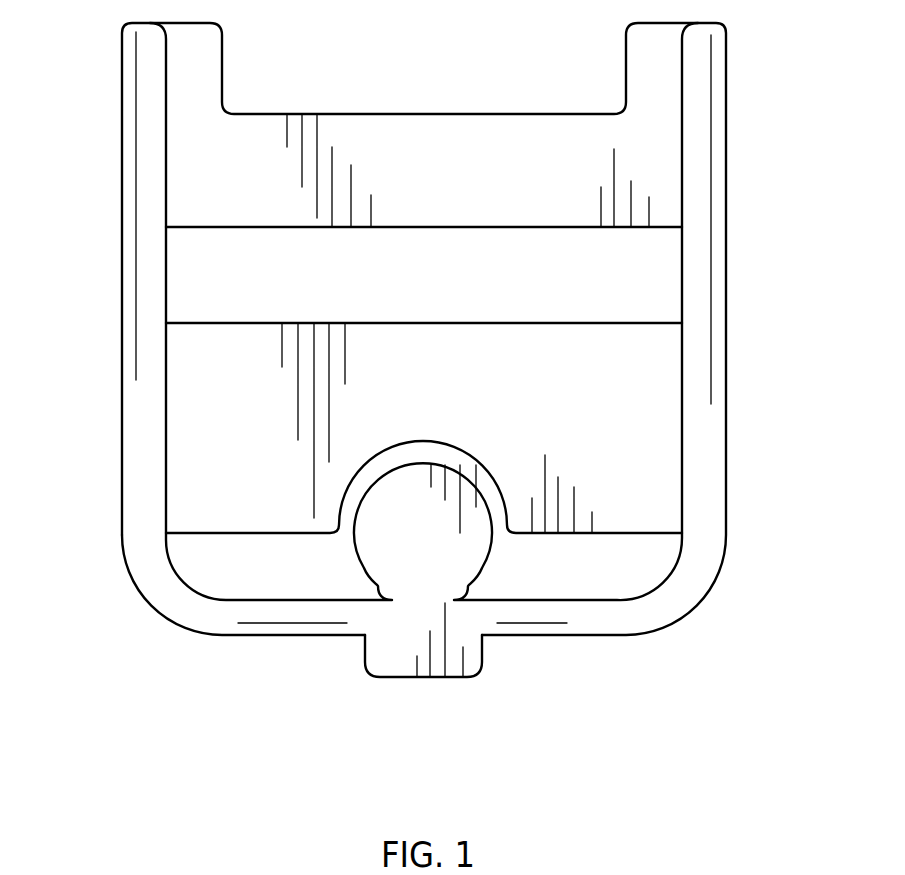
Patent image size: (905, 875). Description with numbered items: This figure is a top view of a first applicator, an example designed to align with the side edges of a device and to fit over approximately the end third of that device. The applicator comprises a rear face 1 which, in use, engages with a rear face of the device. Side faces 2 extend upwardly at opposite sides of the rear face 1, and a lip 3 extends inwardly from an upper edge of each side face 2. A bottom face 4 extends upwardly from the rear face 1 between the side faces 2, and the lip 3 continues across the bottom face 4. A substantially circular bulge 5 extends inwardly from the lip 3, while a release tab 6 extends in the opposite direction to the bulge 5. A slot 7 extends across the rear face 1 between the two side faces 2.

The rear face 1 is at (568, 443).
The side faces 2 is at (140, 168).
The lip 3 is at (155, 203).
The bottom face 4 is at (240, 636).
The bulge 5 is at (410, 545).
The release tab 6 is at (407, 655).
The slot 7 is at (417, 284).